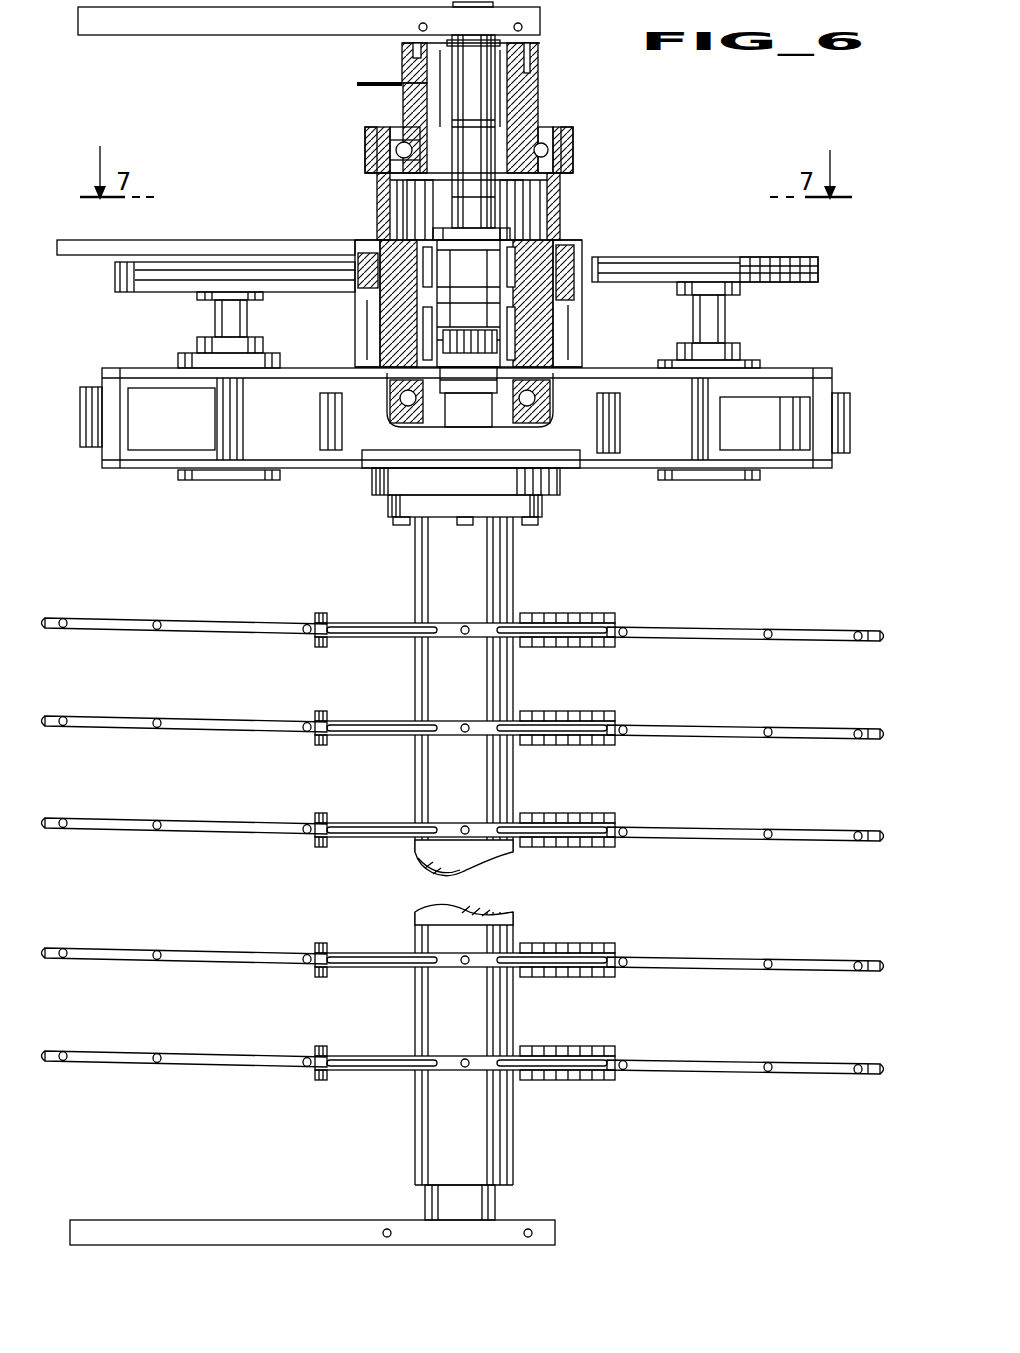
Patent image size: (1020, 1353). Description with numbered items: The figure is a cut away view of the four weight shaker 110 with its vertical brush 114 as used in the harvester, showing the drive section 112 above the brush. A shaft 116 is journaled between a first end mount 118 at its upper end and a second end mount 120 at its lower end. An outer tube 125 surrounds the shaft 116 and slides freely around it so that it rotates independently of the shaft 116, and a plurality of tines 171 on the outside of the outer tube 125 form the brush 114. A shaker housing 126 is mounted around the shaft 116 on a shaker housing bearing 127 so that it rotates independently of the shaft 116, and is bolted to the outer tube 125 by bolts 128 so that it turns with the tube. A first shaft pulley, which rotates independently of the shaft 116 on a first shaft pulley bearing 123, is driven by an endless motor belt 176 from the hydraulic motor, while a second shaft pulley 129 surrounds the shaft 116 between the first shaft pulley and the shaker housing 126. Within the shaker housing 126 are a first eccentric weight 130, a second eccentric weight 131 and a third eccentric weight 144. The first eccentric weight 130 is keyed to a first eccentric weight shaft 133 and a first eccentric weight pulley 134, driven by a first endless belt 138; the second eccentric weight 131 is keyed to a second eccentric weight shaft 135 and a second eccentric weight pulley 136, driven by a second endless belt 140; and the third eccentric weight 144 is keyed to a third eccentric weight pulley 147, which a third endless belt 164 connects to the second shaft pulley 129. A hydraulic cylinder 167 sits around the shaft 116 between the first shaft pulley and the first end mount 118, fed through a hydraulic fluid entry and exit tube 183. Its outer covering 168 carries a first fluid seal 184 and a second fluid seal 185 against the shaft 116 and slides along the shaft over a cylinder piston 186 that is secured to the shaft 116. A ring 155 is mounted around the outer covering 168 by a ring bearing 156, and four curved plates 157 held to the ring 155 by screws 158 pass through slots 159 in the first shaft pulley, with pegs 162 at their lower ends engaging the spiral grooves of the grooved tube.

The mixing apparatus 110 is at (166, 160).
The drive section 112 is at (85, 510).
The vertical brush 114 is at (790, 588).
The shaft 116 is at (493, 98).
The first end mount 118 is at (160, 35).
The second end mount 120 is at (548, 1220).
The first shaft pulley bearing 123 is at (560, 233).
The outer tube 125 is at (413, 855).
The shaker housing 126 is at (131, 470).
The shaker housing bearing 127 is at (360, 470).
The bolts 128 is at (465, 527).
The second shaft pulley 129 is at (357, 335).
The first eccentric weight 130 is at (850, 397).
The second eccentric weight 131 is at (83, 397).
The first eccentric weight shaft 133 is at (727, 317).
The first eccentric weight pulley 134 is at (673, 257).
The second eccentric weight shaft 135 is at (217, 315).
The second eccentric weight pulley 136 is at (136, 296).
The first endless belt 138 is at (818, 263).
The second endless belt 140 is at (115, 270).
The third eccentric weight 144 is at (312, 470).
The third eccentric weight pulley 147 is at (580, 343).
The ring 155 is at (370, 130).
The ring bearing 156 is at (553, 130).
The curved plates 157 is at (377, 188).
The screws 158 is at (365, 147).
The slots 159 is at (387, 233).
The pegs 162 is at (358, 312).
The third endless belt 164 is at (580, 313).
The hydraulic cylinder 167 is at (385, 52).
The outer covering 168 is at (542, 76).
The tines 171 is at (163, 735).
The endless motor belt 176 is at (245, 240).
The hydraulic fluid entry and exit tube 183 is at (357, 87).
The first fluid seal 184 is at (517, 173).
The second fluid seal 185 is at (497, 46).
The cylinder piston 186 is at (420, 103).